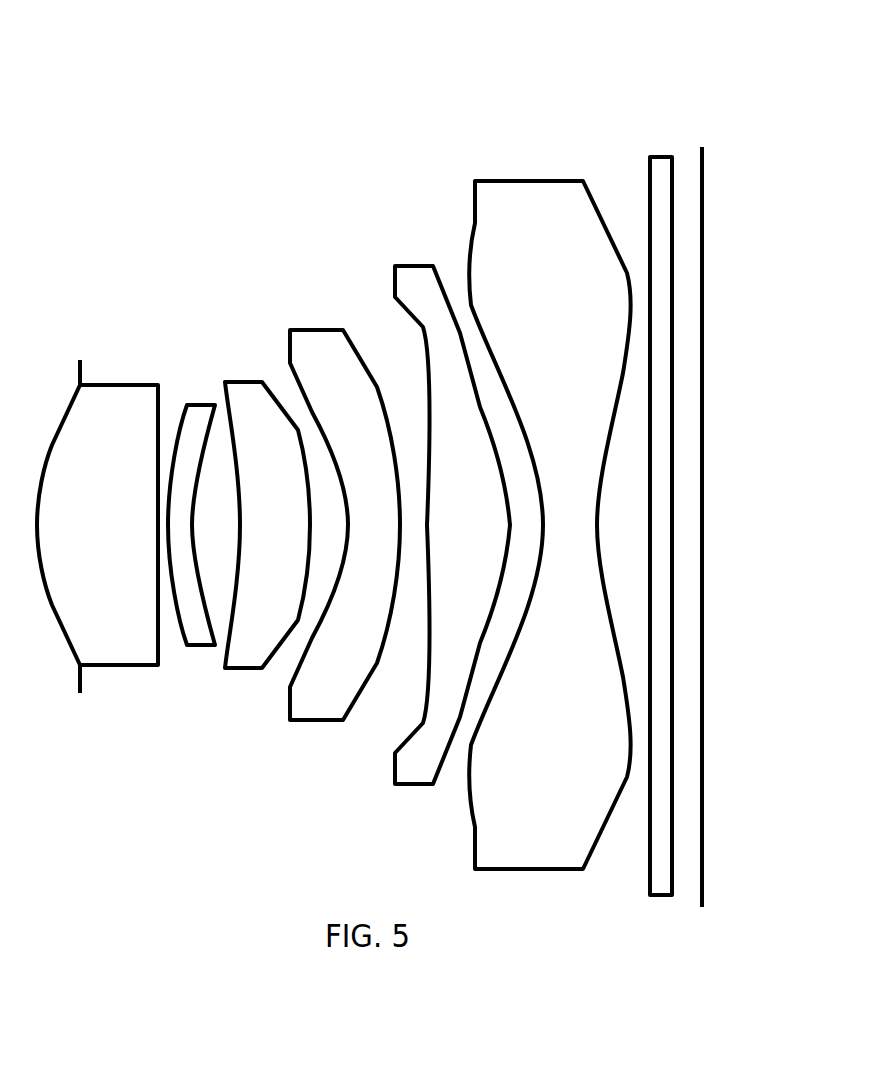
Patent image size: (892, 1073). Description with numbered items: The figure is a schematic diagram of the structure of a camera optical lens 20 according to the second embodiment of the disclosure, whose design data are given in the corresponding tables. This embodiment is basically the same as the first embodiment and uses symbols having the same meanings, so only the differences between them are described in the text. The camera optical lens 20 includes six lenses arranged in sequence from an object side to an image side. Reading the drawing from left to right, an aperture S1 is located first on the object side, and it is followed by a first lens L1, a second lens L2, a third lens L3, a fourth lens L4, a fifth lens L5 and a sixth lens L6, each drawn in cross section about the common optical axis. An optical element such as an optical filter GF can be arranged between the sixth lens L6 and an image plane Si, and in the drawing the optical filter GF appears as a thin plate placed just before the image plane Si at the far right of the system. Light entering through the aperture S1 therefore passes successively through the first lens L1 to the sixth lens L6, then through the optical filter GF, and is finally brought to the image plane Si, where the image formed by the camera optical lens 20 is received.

The camera optical lens 20 is at (378, 53).
The aperture S1 is at (62, 525).
The first lens L1 is at (97, 510).
The second lens L2 is at (191, 508).
The third lens L3 is at (267, 505).
The fourth lens L4 is at (345, 507).
The fifth lens L5 is at (452, 510).
The sixth lens L6 is at (549, 509).
The optical filter GF is at (665, 509).
The image plane Si is at (702, 510).